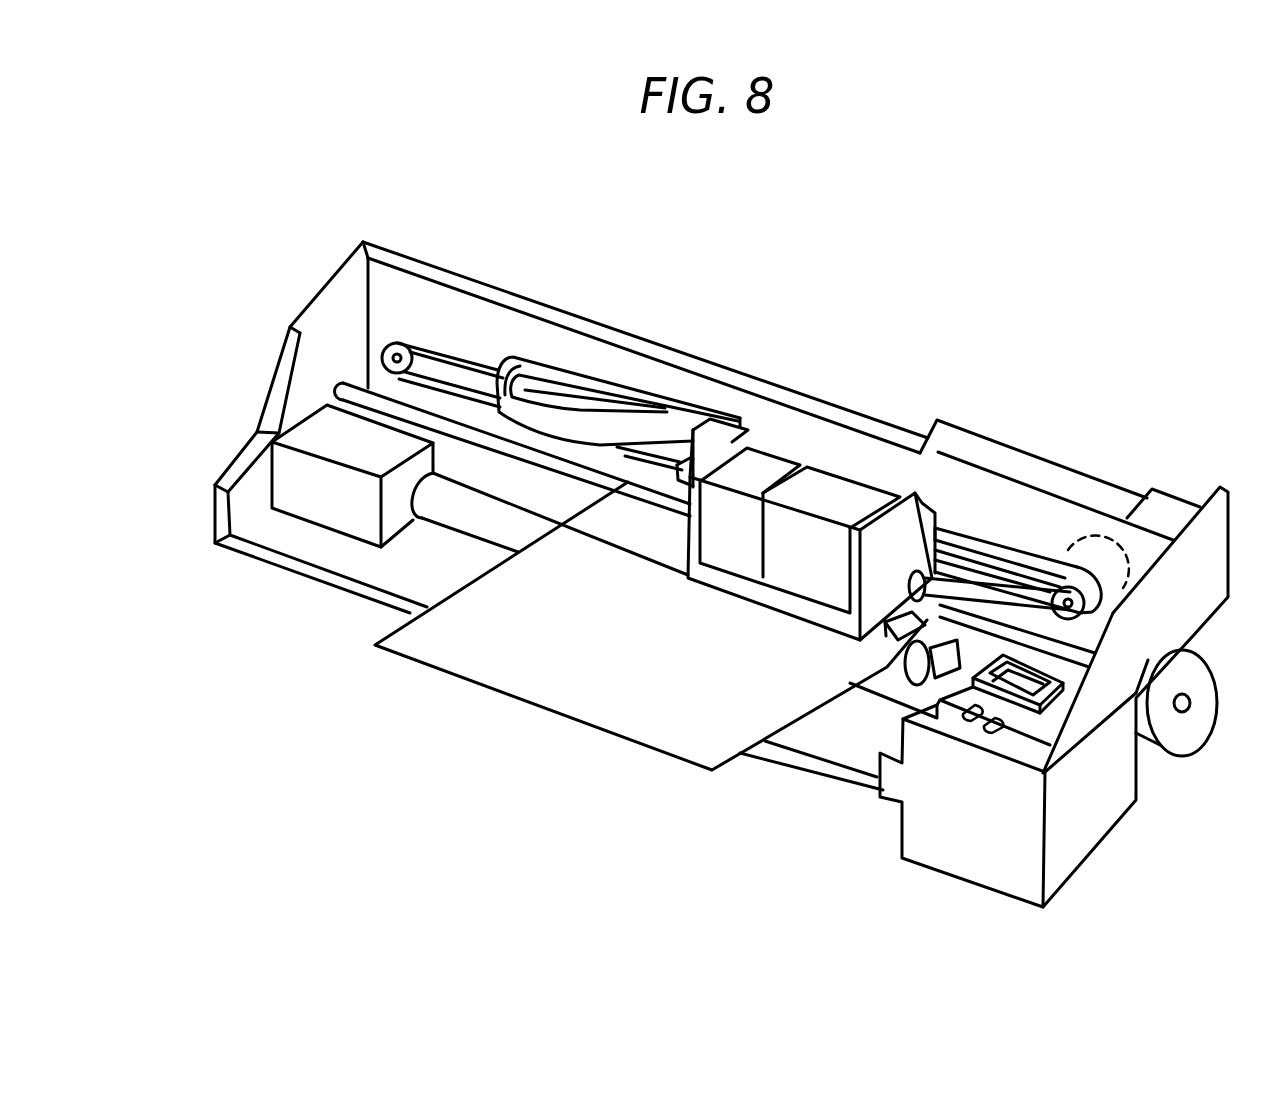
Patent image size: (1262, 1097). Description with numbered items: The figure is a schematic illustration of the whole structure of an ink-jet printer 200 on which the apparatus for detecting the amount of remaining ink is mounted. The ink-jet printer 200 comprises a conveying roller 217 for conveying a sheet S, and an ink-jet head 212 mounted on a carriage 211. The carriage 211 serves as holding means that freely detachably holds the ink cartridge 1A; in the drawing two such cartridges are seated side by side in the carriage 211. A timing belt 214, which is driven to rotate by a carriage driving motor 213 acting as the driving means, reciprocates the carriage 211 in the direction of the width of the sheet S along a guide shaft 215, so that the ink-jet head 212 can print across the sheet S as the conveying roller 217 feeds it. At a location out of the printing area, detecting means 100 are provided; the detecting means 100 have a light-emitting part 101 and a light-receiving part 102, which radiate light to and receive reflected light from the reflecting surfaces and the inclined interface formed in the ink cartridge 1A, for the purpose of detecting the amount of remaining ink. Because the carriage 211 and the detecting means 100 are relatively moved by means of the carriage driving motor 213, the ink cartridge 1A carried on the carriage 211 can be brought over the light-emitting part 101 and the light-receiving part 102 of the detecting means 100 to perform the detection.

The ink-jet printer 200 is at (1020, 340).
The timing belt 214 is at (467, 367).
The guide shaft 215 is at (340, 385).
The conveying roller 217 is at (467, 522).
The sheet S is at (587, 698).
The carriage 211 is at (782, 600).
The ink cartridge 1A is at (763, 460).
The carriage driving motor 213 is at (1082, 540).
The ink-jet head 212 is at (897, 620).
The detecting means 100 is at (917, 918).
The light-emitting part 101 is at (987, 722).
The light-receiving part 102 is at (973, 710).